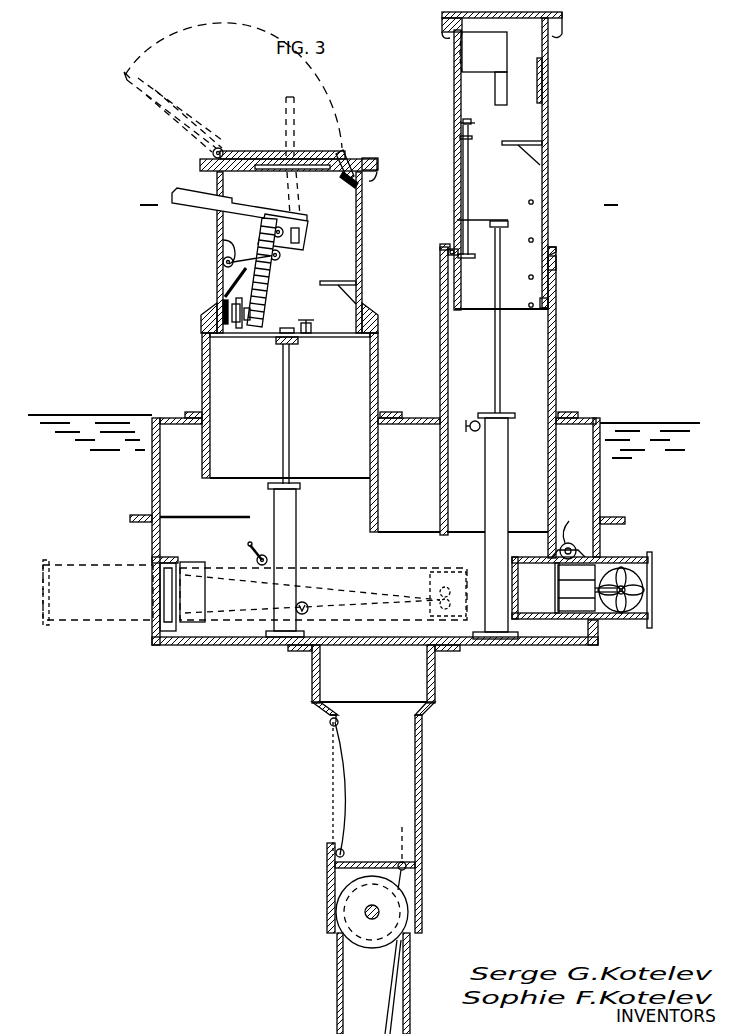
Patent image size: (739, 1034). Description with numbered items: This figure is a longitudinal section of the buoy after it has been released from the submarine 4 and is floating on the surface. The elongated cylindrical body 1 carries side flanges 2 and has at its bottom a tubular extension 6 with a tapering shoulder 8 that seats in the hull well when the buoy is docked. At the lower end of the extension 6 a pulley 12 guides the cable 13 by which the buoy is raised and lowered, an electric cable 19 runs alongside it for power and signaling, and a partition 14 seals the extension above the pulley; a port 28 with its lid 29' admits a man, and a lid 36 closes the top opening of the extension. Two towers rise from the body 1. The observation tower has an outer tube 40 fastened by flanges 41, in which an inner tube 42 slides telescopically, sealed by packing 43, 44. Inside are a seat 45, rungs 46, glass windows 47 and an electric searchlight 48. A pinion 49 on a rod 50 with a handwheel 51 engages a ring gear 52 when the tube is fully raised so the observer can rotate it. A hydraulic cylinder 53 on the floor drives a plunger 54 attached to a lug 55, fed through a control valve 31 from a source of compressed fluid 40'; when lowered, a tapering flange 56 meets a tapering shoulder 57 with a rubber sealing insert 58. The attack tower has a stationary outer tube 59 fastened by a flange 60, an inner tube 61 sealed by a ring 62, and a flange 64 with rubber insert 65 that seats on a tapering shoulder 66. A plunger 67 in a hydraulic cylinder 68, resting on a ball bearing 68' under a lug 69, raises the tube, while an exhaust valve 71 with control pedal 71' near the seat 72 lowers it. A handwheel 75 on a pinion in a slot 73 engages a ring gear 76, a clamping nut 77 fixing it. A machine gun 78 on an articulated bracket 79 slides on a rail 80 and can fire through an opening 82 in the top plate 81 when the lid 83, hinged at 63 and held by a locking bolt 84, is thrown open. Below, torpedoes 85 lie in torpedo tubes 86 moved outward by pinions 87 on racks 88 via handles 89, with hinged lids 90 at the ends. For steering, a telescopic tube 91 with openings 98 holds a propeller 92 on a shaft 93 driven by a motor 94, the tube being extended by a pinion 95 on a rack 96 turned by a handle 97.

The body 1 is at (586, 417).
The flanges 2 is at (138, 515).
The submarine 4 is at (371, 207).
The tubular extension 6 is at (422, 784).
The tapering shoulder 8 is at (428, 710).
The pulley 12 is at (375, 946).
The cable 13 is at (410, 964).
The partition 14 is at (352, 862).
The electric cable 19 is at (406, 866).
The port 28 is at (333, 740).
The cable 29' is at (357, 788).
The control valve 31 is at (474, 432).
The lid 36 is at (380, 640).
The tube 40 is at (514, 402).
The source of compressed fluid 40' is at (440, 521).
The flanges 41 is at (562, 412).
The inner tube 42 is at (548, 178).
The packing 43 is at (550, 304).
The packing 44 is at (556, 252).
The seat 45 is at (535, 141).
The rungs 46 is at (534, 202).
The glass windows 47 is at (548, 78).
The electric searchlight 48 is at (460, 60).
The pinion 49 is at (448, 247).
The rod 50 is at (463, 190).
The handwheel 51 is at (475, 123).
The ring gear 52 is at (440, 260).
The hydraulic cylinder 53 is at (508, 478).
The plunger 54 is at (501, 375).
The lug 55 is at (499, 220).
The tapering flange 56 is at (565, 28).
The tapering shoulder 57 is at (551, 246).
The rubber sealing insert 58 is at (442, 36).
The outer tube 59 is at (378, 350).
The flange 60 is at (388, 412).
The inner tube 61 is at (362, 228).
The ring 62 is at (204, 338).
The hinge 63 is at (221, 149).
The flange 64 is at (378, 164).
The rubber insert 65 is at (378, 178).
The tapering shoulder 66 is at (364, 306).
The plunger 67 is at (283, 440).
The hydraulic cylinder 68 is at (272, 560).
The ball bearing 68' is at (296, 351).
The lug 69 is at (326, 337).
The exhaust valve 71 is at (315, 601).
The control pedal 71' is at (320, 316).
The seat 72 is at (336, 281).
The slot 73 is at (222, 262).
The handwheel 75 is at (250, 302).
The ring gear 76 is at (203, 316).
The clamping nut 77 is at (228, 326).
The machine gun 78 is at (174, 192).
The articulated bracket 79 is at (278, 226).
The rail 80 is at (223, 240).
The top plate 81 is at (358, 170).
The opening 82 is at (302, 171).
The lid 83 is at (315, 158).
The locking bolt 84 is at (345, 152).
The torpedoes 85 is at (228, 630).
The torpedo tubes 86 is at (222, 568).
The pinions 87 is at (257, 558).
The racks 88 is at (385, 568).
The handles 89 is at (250, 544).
The hinged lids 90 is at (160, 582).
The telescopic tube 91 is at (642, 557).
The propeller 92 is at (643, 587).
The shaft 93 is at (640, 596).
The motor 94 is at (576, 612).
The pinion 95 is at (570, 543).
The rack 96 is at (558, 554).
The handle 97 is at (566, 521).
The openings 98 is at (652, 562).